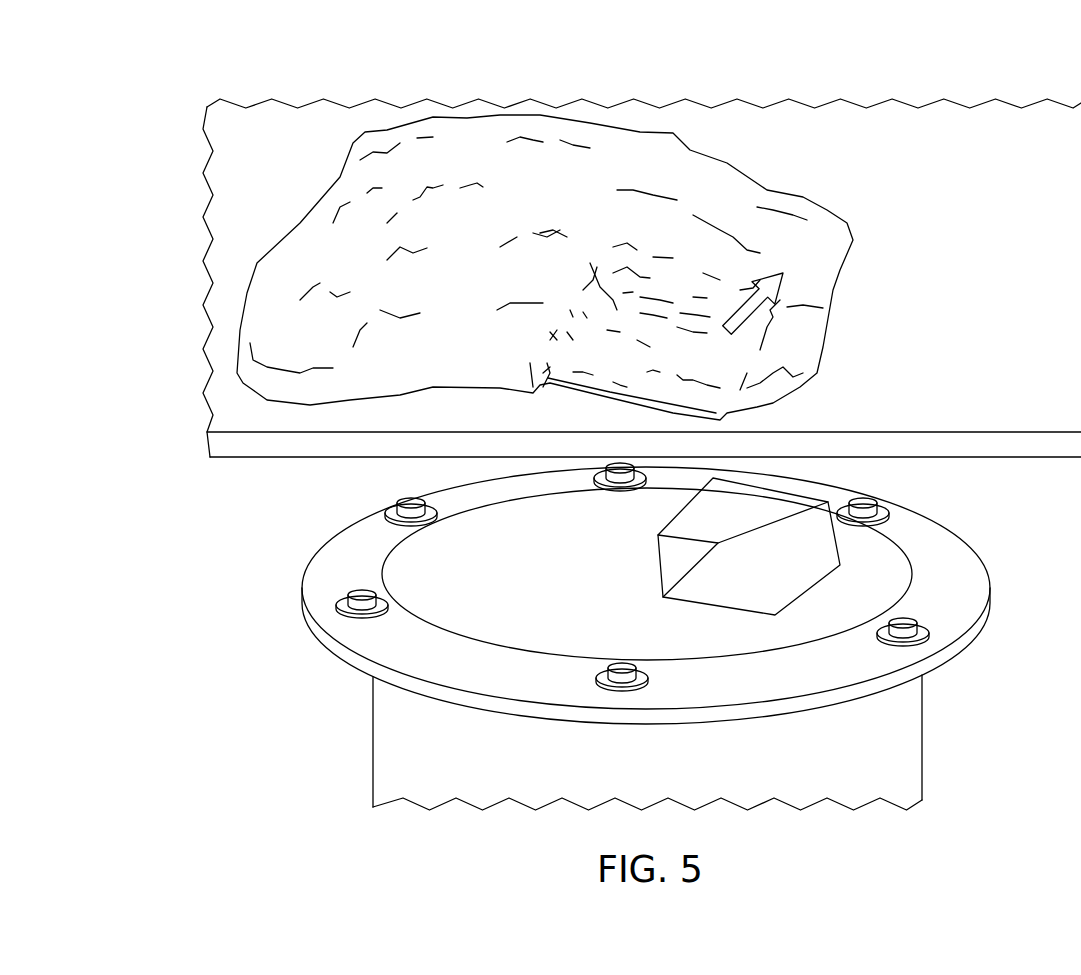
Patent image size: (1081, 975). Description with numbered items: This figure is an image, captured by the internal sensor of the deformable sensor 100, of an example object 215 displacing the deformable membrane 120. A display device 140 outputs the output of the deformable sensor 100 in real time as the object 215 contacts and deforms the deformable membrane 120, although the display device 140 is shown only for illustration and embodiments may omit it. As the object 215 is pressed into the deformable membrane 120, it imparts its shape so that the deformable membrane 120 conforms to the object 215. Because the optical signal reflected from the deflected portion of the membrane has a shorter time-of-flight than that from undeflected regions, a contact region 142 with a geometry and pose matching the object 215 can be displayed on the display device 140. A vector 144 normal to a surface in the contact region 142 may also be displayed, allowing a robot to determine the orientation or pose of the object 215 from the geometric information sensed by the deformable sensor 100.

The deformable sensor 100 is at (646, 636).
The deformable membrane 120 is at (523, 565).
The display device 140 is at (970, 96).
The contact region 142 is at (591, 263).
The vector 144 is at (785, 268).
The object 215 is at (665, 553).